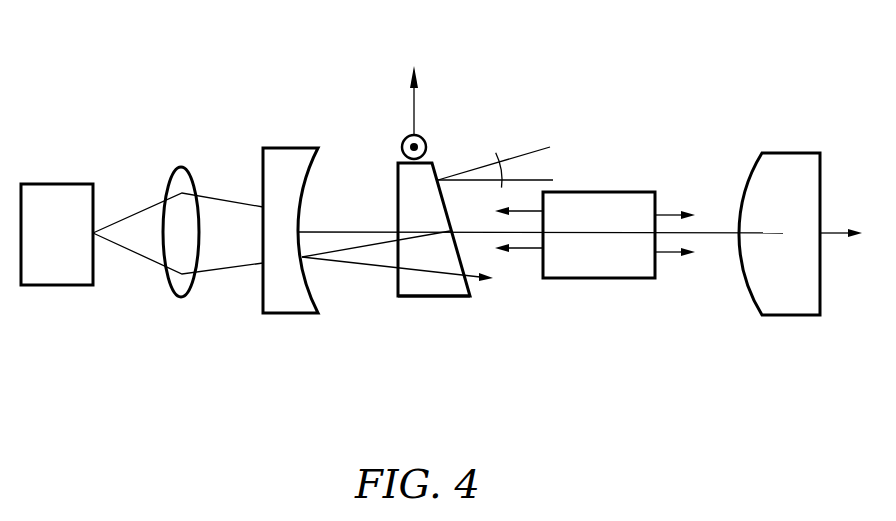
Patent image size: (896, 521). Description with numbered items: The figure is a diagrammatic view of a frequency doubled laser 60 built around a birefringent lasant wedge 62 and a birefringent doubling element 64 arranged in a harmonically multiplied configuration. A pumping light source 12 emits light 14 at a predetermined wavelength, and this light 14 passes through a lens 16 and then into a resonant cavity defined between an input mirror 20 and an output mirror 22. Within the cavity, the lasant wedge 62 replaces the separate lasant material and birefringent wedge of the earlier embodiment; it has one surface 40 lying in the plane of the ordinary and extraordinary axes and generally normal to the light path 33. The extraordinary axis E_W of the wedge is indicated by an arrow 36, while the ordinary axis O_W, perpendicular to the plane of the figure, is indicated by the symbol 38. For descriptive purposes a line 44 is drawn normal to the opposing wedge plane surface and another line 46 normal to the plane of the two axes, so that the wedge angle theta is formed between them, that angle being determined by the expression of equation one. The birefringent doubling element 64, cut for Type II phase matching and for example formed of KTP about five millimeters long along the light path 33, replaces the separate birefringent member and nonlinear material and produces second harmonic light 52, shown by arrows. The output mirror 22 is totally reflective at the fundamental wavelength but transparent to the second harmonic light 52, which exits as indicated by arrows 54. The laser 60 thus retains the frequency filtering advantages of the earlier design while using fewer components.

The pumping light source 12 is at (68, 250).
The light 14 is at (145, 208).
The lens 16 is at (177, 296).
The input mirror 20 is at (287, 313).
The output mirror 22 is at (777, 317).
The light path 33 is at (750, 232).
The arrow 36 is at (413, 110).
The symbol denoting an arrow perpendicular to the plane of the figure 38 is at (417, 136).
The surface 40 is at (397, 290).
The line 44 is at (522, 155).
The line 46 is at (538, 180).
The second harmonic light 52 is at (517, 248).
The arrows 54 is at (830, 237).
The laser 60 is at (605, 57).
The birefringent lasant wedge 62 is at (432, 298).
The birefringent doubling element 64 is at (573, 280).